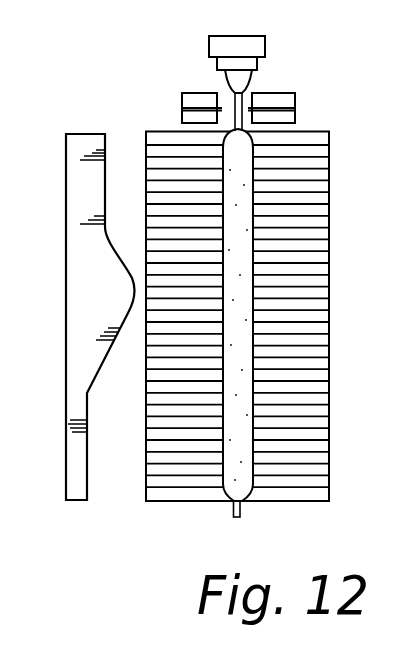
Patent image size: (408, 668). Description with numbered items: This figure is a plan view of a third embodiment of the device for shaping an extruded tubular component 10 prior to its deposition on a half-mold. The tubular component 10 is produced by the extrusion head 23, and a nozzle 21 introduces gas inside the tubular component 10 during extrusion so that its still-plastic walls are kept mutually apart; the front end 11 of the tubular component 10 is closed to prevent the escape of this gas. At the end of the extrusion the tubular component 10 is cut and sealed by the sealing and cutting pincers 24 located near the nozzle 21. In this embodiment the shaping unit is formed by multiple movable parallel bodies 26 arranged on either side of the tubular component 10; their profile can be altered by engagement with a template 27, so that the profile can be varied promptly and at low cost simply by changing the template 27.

The tubular component 10 is at (250, 176).
The end 11 is at (241, 508).
The nozzle 21 is at (207, 43).
The extrusion head 23 is at (265, 48).
The sealing and cutting pincers 24 is at (187, 95).
The movable parallel bodies 26 is at (312, 231).
The template 27 is at (82, 340).